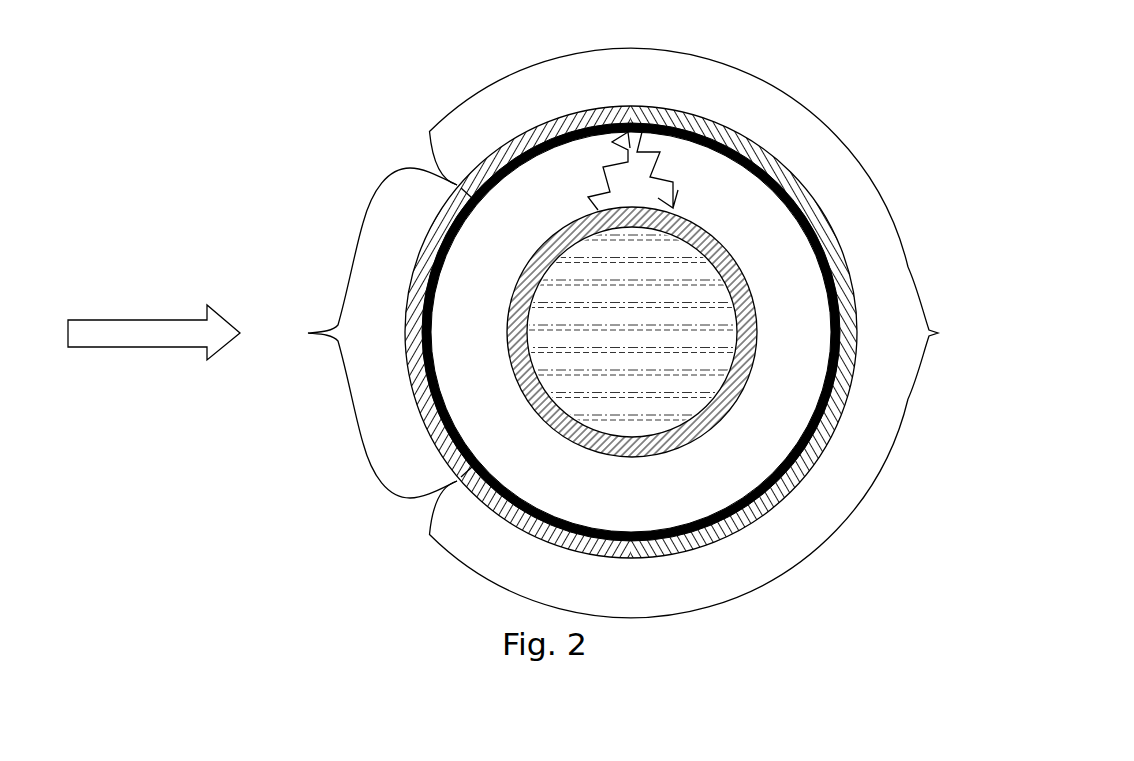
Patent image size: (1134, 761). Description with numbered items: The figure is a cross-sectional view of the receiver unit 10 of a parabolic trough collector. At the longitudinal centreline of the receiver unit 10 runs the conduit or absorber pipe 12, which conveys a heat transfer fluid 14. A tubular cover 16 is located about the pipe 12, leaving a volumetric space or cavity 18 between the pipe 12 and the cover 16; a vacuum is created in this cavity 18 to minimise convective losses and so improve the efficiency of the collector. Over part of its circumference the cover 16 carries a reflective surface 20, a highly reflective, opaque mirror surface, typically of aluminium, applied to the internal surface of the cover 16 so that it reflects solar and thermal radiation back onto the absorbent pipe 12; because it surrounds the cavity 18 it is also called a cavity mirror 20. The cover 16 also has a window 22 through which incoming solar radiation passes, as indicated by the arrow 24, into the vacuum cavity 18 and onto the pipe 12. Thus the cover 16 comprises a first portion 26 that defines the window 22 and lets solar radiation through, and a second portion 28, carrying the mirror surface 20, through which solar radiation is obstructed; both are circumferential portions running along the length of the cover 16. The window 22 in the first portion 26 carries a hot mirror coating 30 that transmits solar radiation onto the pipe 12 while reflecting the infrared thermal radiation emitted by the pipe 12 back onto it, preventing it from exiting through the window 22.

The receiver unit 10 is at (812, 110).
The conduit 12 is at (723, 240).
The heat transfer fluid 14 is at (652, 420).
The cover 16 is at (663, 113).
The cavity 18 is at (607, 504).
The reflective surface 20 is at (830, 383).
The window 22 is at (411, 307).
The arrow 24 is at (138, 320).
The first portion 26 is at (313, 333).
The second portion 28 is at (947, 333).
The hot mirror coating 30 is at (440, 277).